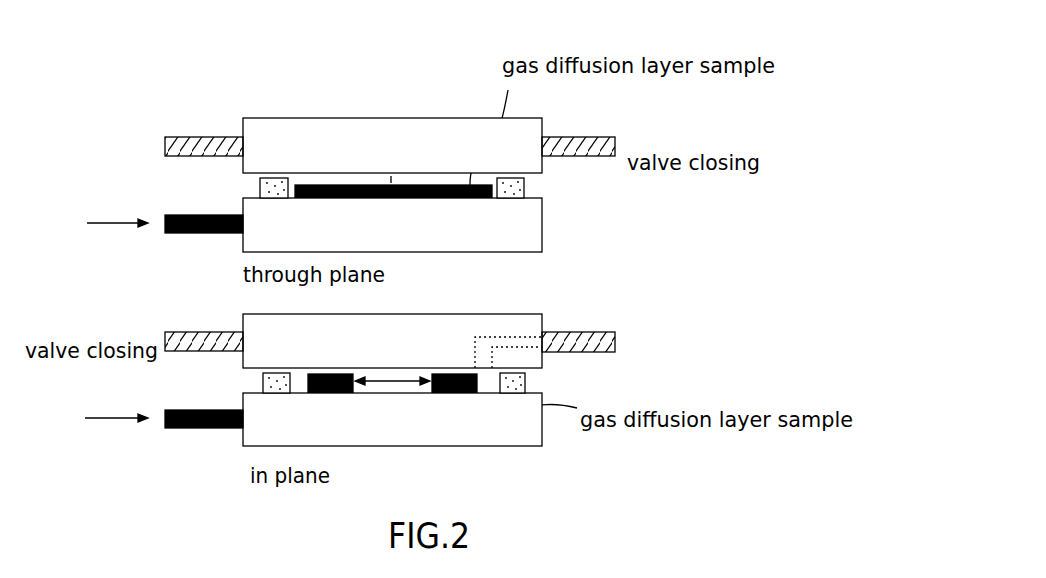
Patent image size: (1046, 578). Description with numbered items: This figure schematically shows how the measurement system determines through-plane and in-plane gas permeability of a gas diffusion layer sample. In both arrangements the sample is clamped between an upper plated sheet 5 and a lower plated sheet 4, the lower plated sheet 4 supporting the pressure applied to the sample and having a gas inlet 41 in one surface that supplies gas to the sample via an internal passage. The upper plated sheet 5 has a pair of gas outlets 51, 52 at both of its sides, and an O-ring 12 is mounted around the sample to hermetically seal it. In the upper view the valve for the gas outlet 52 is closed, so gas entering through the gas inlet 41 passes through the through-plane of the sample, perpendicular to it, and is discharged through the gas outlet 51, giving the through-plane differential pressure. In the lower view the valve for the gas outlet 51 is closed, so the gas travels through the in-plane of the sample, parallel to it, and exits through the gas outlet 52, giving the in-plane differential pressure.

The lower plated sheet 4 is at (243, 243).
The upper plated sheet 5 is at (533, 165).
The O-ring 12 is at (522, 197).
The gas inlet 41 is at (165, 233).
The gas outlet 51 is at (165, 140).
The gas outlet 52 is at (616, 142).